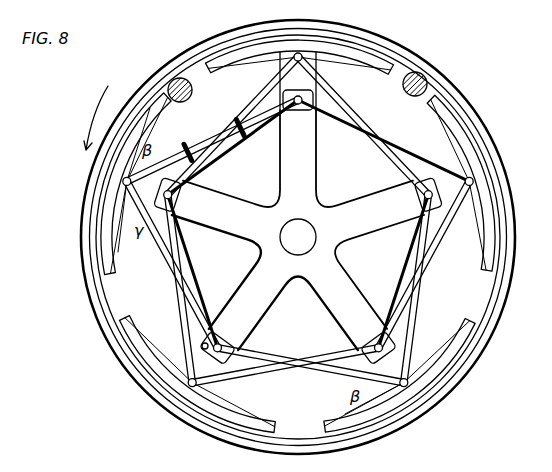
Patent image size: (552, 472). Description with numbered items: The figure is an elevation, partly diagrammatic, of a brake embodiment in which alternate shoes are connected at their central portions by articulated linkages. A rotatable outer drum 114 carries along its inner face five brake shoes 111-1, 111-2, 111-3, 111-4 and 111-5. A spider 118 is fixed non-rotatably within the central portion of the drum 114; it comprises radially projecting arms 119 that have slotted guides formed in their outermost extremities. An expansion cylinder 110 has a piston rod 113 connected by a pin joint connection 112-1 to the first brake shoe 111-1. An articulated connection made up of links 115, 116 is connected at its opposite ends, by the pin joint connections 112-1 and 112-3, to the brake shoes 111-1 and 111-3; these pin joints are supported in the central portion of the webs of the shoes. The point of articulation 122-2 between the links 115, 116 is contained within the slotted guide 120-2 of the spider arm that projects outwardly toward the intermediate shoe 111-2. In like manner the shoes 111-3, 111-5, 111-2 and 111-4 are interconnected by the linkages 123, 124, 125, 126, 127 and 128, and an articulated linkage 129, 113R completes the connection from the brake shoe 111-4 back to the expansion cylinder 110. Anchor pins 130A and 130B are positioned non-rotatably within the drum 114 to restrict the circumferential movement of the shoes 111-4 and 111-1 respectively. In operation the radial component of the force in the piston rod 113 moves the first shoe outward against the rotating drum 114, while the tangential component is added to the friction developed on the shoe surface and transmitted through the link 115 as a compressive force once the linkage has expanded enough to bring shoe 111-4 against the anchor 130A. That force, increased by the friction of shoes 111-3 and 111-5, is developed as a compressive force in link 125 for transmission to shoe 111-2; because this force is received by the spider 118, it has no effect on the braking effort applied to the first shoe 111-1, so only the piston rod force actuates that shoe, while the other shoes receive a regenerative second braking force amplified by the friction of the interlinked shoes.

The expansion cylinder 110 is at (231, 158).
The first brake shoe 111-1 is at (117, 244).
The intermediate brake shoe 111-2 is at (240, 405).
The brake shoe 111-3 is at (435, 344).
The brake shoe 111-4 is at (477, 236).
The brake shoe 111-5 is at (361, 64).
The pin joint connection 112-1 is at (123, 181).
The pin joint connection 112-3 is at (410, 386).
The piston rod 113 is at (181, 150).
The articulated linkage 113R is at (232, 136).
The rotatable outer drum 114 is at (84, 240).
The articulated connection link 115 is at (189, 292).
The articulated connection link 116 is at (297, 362).
The spider 118 is at (338, 182).
The radially projecting arm 119 is at (268, 315).
The slotted guide 120-2 is at (201, 344).
The point of articulation 122-2 is at (219, 345).
The linkage 123 is at (417, 265).
The linkage 124 is at (358, 121).
The link 125 is at (263, 92).
The linkage 126 is at (178, 251).
The linkage 127 is at (340, 357).
The linkage 128 is at (431, 262).
The articulated linkage 129 is at (405, 148).
The anchor pin 130A is at (427, 82).
The anchor pin 130B is at (170, 84).